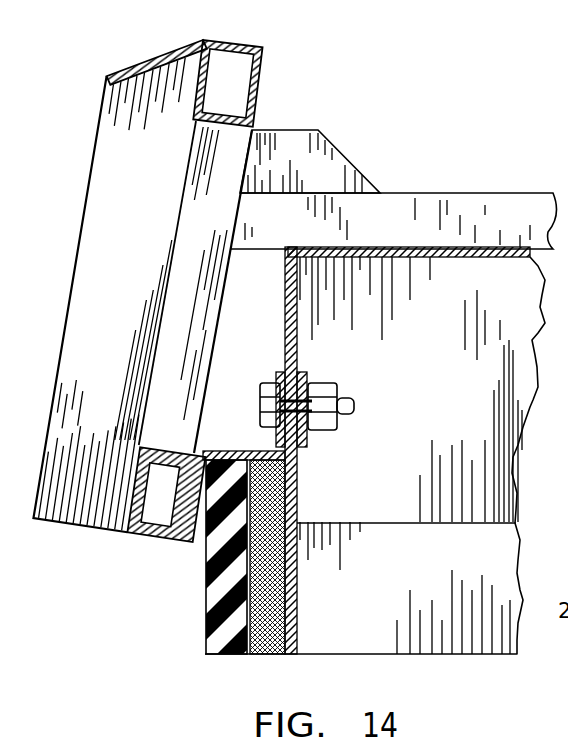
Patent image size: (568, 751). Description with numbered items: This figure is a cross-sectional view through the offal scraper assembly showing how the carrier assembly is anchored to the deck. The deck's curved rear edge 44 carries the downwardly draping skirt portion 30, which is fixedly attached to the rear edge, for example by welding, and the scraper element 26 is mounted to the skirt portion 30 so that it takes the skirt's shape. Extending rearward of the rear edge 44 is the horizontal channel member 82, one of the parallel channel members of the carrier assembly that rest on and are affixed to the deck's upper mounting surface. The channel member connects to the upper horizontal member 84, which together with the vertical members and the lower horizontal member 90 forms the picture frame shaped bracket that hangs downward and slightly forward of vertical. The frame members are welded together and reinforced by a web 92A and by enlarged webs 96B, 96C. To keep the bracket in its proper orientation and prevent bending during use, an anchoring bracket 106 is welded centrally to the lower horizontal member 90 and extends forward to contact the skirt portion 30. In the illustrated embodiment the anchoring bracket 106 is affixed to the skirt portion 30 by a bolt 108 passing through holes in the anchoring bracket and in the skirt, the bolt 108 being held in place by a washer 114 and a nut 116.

The scraper element 26 is at (200, 590).
The skirt portion 30 is at (452, 339).
The rear edge 44 is at (286, 252).
The horizontal channel member 82 is at (466, 194).
The upper horizontal member 84 is at (263, 62).
The lower horizontal member 90 is at (138, 481).
The web 92A is at (342, 152).
The enlarged web 96B is at (97, 153).
The enlarged web 96C is at (138, 62).
The anchoring bracket 106 is at (282, 371).
The bolt 108 is at (356, 405).
The washer 114 is at (310, 380).
The nut 116 is at (336, 386).